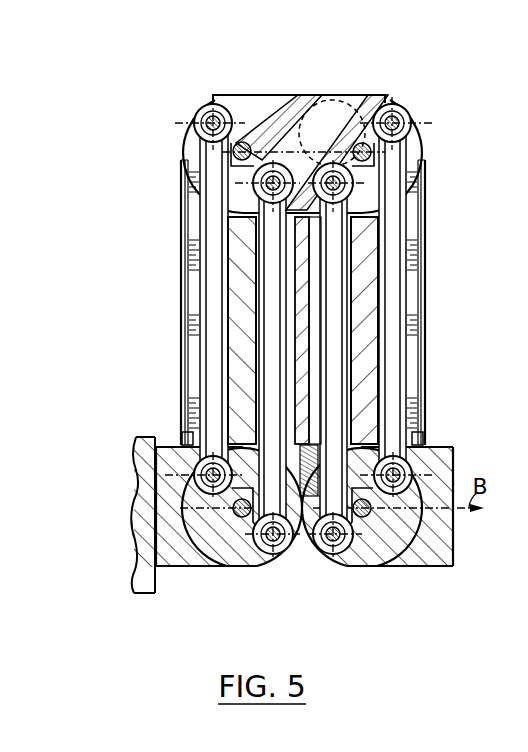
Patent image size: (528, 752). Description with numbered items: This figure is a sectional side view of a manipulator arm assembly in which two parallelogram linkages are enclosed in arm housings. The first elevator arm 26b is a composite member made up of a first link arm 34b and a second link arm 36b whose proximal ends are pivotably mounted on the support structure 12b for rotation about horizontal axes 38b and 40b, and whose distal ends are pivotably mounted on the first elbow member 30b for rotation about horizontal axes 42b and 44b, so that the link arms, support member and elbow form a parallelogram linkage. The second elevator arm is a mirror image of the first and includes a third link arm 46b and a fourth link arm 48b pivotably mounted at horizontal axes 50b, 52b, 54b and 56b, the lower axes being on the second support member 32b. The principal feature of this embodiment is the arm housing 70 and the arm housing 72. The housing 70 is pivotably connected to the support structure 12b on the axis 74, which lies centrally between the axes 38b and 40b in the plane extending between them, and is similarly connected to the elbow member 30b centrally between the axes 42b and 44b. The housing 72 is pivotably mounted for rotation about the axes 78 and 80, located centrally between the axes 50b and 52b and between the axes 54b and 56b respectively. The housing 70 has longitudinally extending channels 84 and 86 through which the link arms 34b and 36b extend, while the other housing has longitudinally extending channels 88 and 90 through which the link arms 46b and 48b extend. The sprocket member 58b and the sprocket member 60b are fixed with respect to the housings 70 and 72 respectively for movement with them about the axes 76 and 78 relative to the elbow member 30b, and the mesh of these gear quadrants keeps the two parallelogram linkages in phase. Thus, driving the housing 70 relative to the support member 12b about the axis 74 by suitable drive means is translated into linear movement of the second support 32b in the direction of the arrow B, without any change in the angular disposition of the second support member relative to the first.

The support structure 12b is at (163, 523).
The first elevator arm 26b is at (155, 298).
The first elbow member 30b is at (310, 130).
The second support member 32b is at (390, 560).
The first link arm 34b is at (273, 362).
The second link arm 36b is at (208, 365).
The horizontal axis 38b is at (278, 552).
The horizontal axis 40b is at (208, 493).
The horizontal axis 42b is at (252, 183).
The horizontal axis 44b is at (198, 126).
The third link arm 46b is at (337, 353).
The fourth link arm 48b is at (393, 320).
The horizontal axis 50b is at (341, 183).
The horizontal axis 52b is at (406, 114).
The horizontal axis 54b is at (329, 558).
The horizontal axis 56b is at (412, 462).
The sprocket member 58b is at (244, 125).
The sprocket member 60b is at (352, 108).
The arm housing 70 is at (180, 418).
The arm housing 72 is at (422, 415).
The axis 74 is at (237, 560).
The axis 76 is at (296, 130).
The axis 78 is at (368, 156).
The axis 80 is at (430, 567).
The channel 84 is at (293, 293).
The channel 86 is at (192, 387).
The channel 88 is at (317, 375).
The channel 90 is at (415, 283).